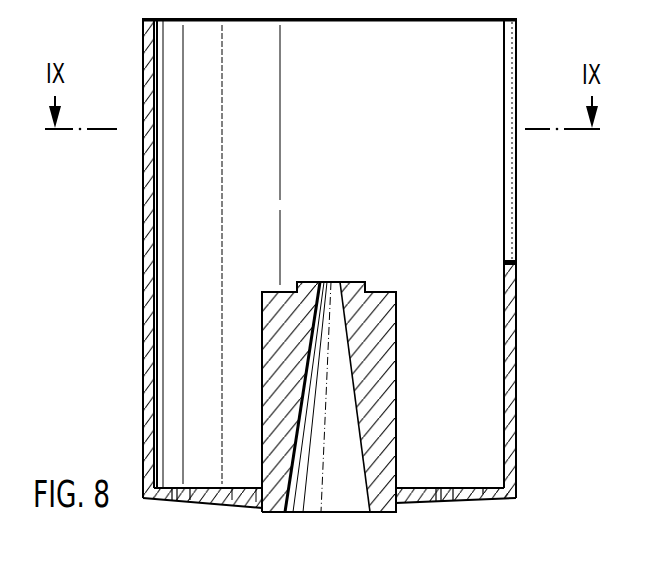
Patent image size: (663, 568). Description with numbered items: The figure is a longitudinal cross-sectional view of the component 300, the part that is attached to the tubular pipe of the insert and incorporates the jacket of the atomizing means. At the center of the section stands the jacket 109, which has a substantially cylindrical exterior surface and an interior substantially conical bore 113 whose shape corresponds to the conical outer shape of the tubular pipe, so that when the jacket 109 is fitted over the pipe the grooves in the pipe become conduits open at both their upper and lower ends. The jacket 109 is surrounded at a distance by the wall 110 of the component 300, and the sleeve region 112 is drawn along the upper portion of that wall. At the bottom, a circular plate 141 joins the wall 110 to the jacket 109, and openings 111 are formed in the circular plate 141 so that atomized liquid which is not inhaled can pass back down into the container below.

The component 300 is at (132, 259).
The cylinder sleeve 112 is at (526, 214).
The wall 110 is at (510, 290).
The jacket 109 is at (372, 362).
The conical bore 113 is at (342, 520).
The openings 111 is at (197, 508).
The circular plate 141 is at (240, 500).